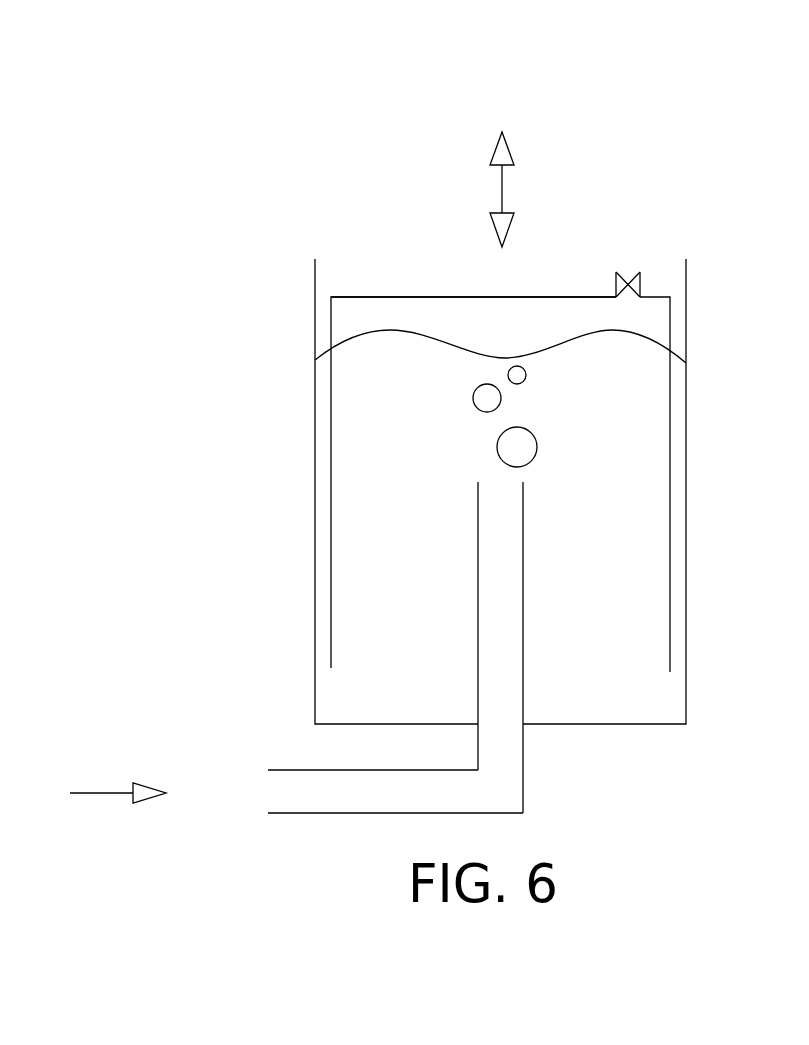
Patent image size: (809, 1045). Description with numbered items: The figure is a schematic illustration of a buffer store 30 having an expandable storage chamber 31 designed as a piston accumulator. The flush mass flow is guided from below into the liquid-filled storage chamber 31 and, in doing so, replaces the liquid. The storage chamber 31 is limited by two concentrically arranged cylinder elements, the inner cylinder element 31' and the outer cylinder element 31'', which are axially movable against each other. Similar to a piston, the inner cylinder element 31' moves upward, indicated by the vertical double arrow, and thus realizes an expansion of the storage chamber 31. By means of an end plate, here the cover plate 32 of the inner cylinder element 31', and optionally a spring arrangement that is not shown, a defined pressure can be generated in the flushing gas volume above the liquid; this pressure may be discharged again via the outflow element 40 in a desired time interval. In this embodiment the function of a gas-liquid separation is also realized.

The buffer store 30 is at (259, 163).
The storage chamber 31 is at (493, 491).
The inner cylinder element 31' is at (442, 484).
The outer cylinder element 31'' is at (448, 491).
The cover plate 32 is at (387, 297).
The outflow element 40 is at (642, 282).